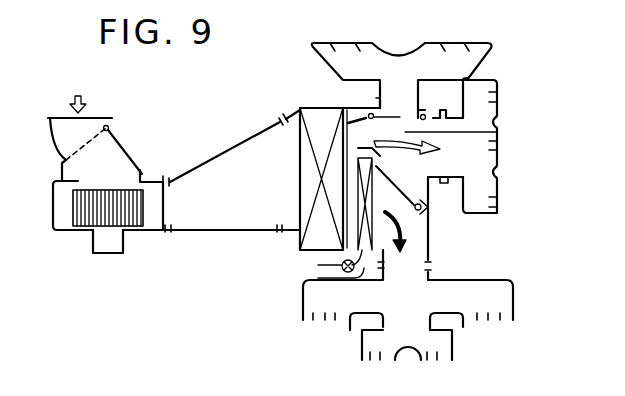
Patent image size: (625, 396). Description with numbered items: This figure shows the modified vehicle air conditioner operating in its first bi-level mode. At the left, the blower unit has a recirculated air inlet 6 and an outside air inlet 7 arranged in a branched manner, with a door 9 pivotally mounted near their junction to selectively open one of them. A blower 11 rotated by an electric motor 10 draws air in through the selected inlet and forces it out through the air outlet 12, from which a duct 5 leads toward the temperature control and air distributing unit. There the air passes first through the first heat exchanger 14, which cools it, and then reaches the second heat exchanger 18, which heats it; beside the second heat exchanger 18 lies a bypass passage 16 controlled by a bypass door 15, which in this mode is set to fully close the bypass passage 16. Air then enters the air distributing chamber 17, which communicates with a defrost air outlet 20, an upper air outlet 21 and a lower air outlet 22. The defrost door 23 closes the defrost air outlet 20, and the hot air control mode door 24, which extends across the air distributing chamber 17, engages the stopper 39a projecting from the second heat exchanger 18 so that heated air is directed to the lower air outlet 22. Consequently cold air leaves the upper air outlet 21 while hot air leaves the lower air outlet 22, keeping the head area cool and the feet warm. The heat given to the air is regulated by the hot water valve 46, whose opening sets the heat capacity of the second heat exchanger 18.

The supply pipe 5 is at (219, 227).
The recirculated air inlet 6 is at (144, 170).
The outside air inlet 7 is at (61, 120).
The door 9 is at (122, 150).
The electric motor 10 is at (113, 253).
The blower 11 is at (82, 236).
The air outlet 12 is at (150, 213).
The first heat exchanger 14 is at (297, 120).
The bypass door 15 is at (362, 110).
The bypass passage 16 is at (313, 130).
The air distributing chamber 17 is at (496, 124).
The second heat exchanger 18 is at (365, 207).
The defrost air outlet 20 is at (392, 90).
The upper air outlet 21 is at (450, 178).
The lower air outlet 22 is at (425, 275).
The defrost door 23 is at (402, 116).
The hot air control mode door 24 is at (408, 210).
The stopper 39a is at (384, 154).
The hot water valve 46 is at (318, 271).